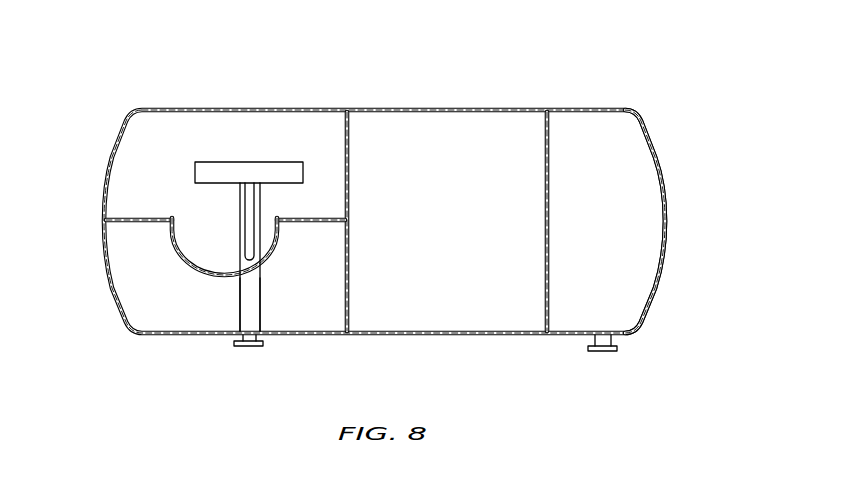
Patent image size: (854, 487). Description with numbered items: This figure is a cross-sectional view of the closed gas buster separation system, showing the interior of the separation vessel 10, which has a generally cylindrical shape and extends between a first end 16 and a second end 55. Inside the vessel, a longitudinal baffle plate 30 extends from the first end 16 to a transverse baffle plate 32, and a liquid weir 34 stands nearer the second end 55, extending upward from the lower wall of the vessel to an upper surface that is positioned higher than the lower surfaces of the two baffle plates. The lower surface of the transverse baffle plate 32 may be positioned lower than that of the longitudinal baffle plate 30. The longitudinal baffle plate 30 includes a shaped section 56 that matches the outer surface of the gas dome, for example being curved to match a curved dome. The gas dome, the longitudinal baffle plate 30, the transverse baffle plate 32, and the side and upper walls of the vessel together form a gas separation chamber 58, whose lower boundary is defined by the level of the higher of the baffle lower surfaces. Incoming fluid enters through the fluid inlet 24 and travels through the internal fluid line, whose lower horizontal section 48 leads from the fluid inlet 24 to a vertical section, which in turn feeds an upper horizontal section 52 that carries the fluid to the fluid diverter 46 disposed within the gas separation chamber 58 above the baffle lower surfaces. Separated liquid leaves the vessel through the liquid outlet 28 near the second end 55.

The separation vessel 10 is at (116, 48).
The first end 16 is at (103, 249).
The fluid inlet 24 is at (252, 348).
The liquid outlet 28 is at (603, 352).
The longitudinal baffle plate 30 is at (122, 214).
The transverse baffle plate 32 is at (350, 133).
The liquid weir 34 is at (551, 130).
The fluid diverter 46 is at (276, 172).
The lower horizontal section 48 is at (240, 299).
The upper horizontal section 52 is at (240, 203).
The second end 55 is at (666, 178).
The shaped section 56 is at (268, 253).
The gas separation chamber 58 is at (207, 133).